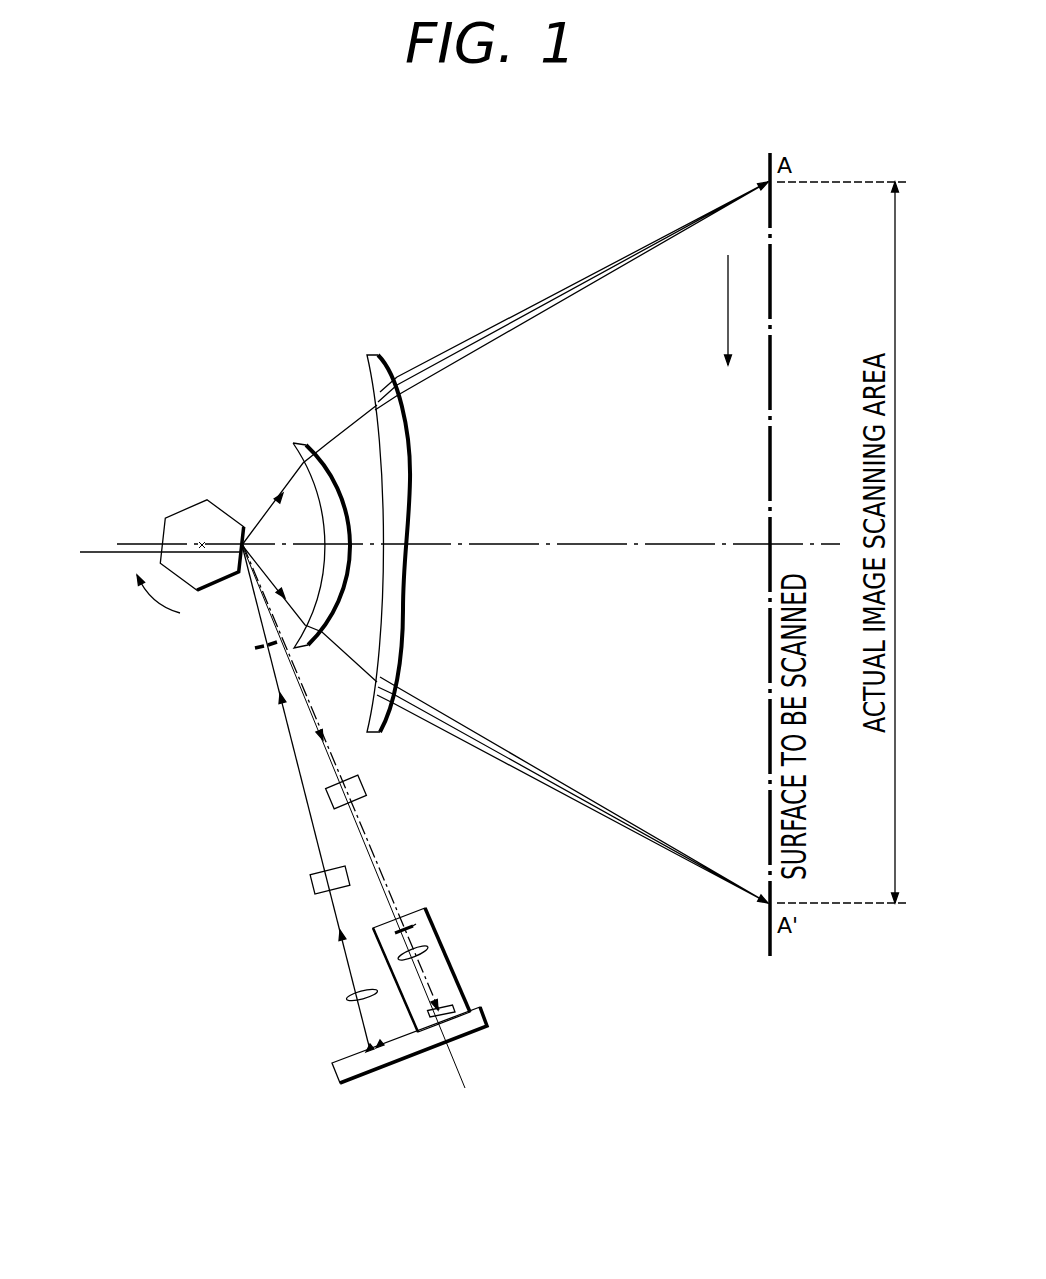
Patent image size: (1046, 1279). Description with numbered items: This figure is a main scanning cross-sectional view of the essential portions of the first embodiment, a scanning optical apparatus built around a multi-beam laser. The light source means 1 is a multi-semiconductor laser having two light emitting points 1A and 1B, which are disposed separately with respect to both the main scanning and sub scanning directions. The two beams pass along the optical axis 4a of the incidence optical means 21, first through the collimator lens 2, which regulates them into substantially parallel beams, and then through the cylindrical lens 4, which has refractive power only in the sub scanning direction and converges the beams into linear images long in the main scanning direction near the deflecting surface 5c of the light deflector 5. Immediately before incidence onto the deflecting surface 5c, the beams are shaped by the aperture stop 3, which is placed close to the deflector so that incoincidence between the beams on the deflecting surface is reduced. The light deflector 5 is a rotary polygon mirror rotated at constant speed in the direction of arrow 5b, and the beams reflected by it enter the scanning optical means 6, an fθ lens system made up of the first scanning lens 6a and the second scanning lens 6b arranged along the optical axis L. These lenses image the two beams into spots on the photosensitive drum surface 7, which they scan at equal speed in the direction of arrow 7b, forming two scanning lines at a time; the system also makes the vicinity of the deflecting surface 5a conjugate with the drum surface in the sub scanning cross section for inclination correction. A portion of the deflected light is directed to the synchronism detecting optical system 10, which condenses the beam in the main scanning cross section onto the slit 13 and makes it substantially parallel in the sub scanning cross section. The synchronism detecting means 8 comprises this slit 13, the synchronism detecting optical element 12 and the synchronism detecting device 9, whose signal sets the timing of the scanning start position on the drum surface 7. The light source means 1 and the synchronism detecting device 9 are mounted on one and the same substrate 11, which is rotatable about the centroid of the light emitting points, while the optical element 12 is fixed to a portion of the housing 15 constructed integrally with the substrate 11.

The light source means 1 is at (332, 1062).
The light emitting point 1A is at (372, 1072).
The light emitting point 1B is at (388, 1067).
The collimator lens 2 is at (345, 997).
The aperture stop 3 is at (262, 652).
The cylindrical lens 4 is at (310, 873).
The optical axis 4a is at (292, 752).
The light deflector 5 is at (178, 500).
The deflecting surface 5a is at (146, 554).
The arrow 5b is at (152, 599).
The deflecting surface 5c is at (238, 572).
The scanning optical means 6 is at (329, 496).
The first scanning lens 6a is at (292, 442).
The second scanning lens 6b is at (371, 519).
The photosensitive drum surface 7 is at (771, 312).
The arrow 7b is at (712, 310).
The synchronism detecting means 8 is at (462, 940).
The synchronism detecting device 9 is at (467, 1037).
The synchronism detecting optical system 10 is at (368, 790).
The substrate 11 is at (427, 1050).
The synchronism detecting optical element 12 is at (428, 943).
The slit 13 is at (410, 915).
The housing 15 is at (457, 977).
The incidence optical means 21 is at (243, 883).
The optical axis L is at (590, 548).